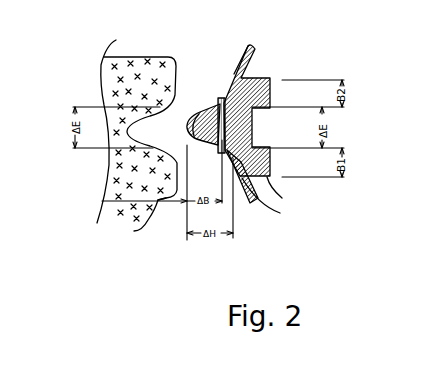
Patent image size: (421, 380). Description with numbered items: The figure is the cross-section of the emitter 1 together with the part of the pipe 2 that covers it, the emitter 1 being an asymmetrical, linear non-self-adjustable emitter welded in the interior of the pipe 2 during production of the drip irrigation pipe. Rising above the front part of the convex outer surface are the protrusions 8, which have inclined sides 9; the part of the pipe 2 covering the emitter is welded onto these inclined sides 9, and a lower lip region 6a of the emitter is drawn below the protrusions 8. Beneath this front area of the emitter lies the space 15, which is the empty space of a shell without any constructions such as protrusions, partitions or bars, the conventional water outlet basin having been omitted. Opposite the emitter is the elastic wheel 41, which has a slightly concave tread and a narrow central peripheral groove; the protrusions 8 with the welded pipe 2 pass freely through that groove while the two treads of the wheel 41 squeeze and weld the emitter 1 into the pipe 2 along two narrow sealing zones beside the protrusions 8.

The emitter 1 is at (262, 78).
The pipe 2 is at (234, 74).
The protrusions 8 is at (198, 112).
The inclined sides 9 is at (208, 106).
The space 15 is at (282, 198).
The elastic wheel 41 is at (137, 138).
The lower sealing lip 6a is at (280, 213).